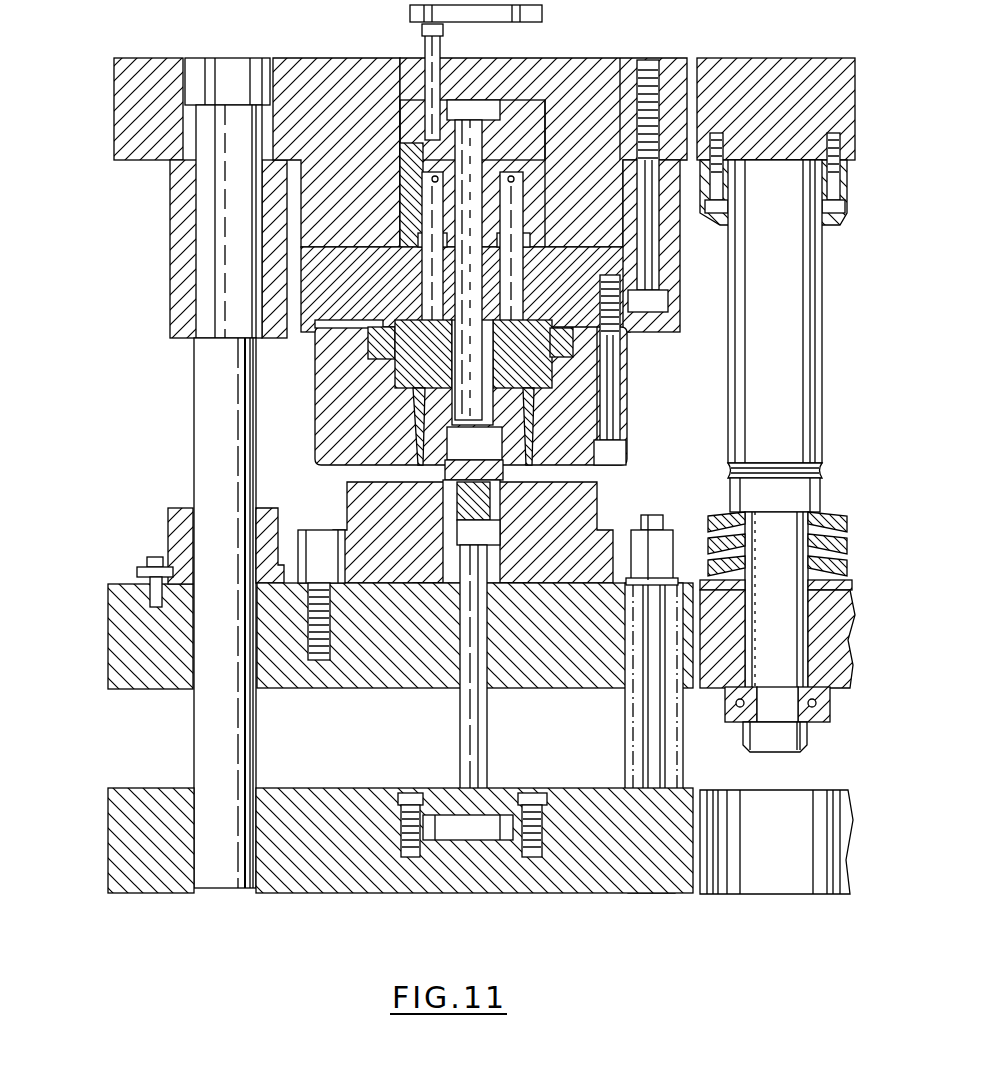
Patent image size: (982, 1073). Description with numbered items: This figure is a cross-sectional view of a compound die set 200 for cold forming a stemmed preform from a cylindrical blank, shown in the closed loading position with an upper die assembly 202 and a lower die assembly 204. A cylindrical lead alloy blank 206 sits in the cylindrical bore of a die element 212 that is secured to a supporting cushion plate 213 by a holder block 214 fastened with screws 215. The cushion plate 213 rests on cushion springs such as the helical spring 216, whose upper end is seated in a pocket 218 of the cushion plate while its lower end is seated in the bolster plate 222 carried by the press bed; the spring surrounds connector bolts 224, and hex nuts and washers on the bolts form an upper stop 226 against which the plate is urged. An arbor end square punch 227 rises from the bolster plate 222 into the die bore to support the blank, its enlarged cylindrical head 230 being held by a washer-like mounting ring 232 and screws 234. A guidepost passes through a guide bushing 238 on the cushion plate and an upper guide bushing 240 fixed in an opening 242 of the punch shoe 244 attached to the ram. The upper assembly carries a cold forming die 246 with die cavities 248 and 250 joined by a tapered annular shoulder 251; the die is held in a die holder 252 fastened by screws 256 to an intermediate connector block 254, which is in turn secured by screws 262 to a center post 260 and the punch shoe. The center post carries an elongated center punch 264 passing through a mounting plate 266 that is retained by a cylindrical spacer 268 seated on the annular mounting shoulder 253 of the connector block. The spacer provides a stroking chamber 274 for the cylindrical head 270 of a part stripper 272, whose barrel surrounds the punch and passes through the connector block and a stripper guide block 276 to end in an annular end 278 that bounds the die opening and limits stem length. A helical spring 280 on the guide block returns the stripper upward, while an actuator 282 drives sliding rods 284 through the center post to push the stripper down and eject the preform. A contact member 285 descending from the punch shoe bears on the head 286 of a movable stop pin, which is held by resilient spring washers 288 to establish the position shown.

The compound die set 200 is at (306, 378).
The upper die assembly 202 is at (645, 350).
The lower die assembly 204 is at (614, 522).
The cylindrical lead alloy blank 206 is at (472, 504).
The die element 212 is at (505, 548).
The cushion plate 213 is at (602, 690).
The holder block 214 is at (353, 505).
The screws 215 is at (320, 690).
The helical spring 216 is at (632, 758).
The pocket 218 is at (677, 685).
The bolster plate 222 is at (593, 884).
The connector bolts 224 is at (655, 768).
The upper stop 226 is at (670, 546).
The arbor end square punch 227 is at (480, 718).
The enlarged cylindrical head 230 is at (482, 833).
The mounting ring 232 is at (430, 789).
The screws 234 is at (407, 790).
The guide bushing 238 is at (178, 512).
The upper guide bushing 240 is at (178, 232).
The opening 242 is at (276, 63).
The punch shoe 244 is at (300, 66).
The cold forming die 246 is at (420, 436).
The die cavity 248 is at (487, 405).
The die cavity 250 is at (503, 440).
The tapered annular shoulder 251 is at (474, 443).
The die holder 252 is at (628, 408).
The annular mounting shoulder 253 is at (405, 250).
The intermediate connector block 254 is at (662, 282).
The screws 256 is at (612, 424).
The center post 260 is at (597, 68).
The screws 262 is at (648, 230).
The center punch 264 is at (510, 297).
The mounting plate 266 is at (532, 118).
The cylindrical spacer 268 is at (535, 187).
The cylindrical head 270 is at (420, 152).
The part stripper 272 is at (509, 218).
The stroking chamber 274 is at (426, 210).
The stripper guide block 276 is at (410, 342).
The annular end 278 is at (430, 415).
The helical spring 280 is at (484, 265).
The actuator 282 is at (532, 14).
The sliding rods 284 is at (446, 42).
The contact member 285 is at (797, 370).
The head 286 is at (765, 470).
The spring 288 is at (722, 522).